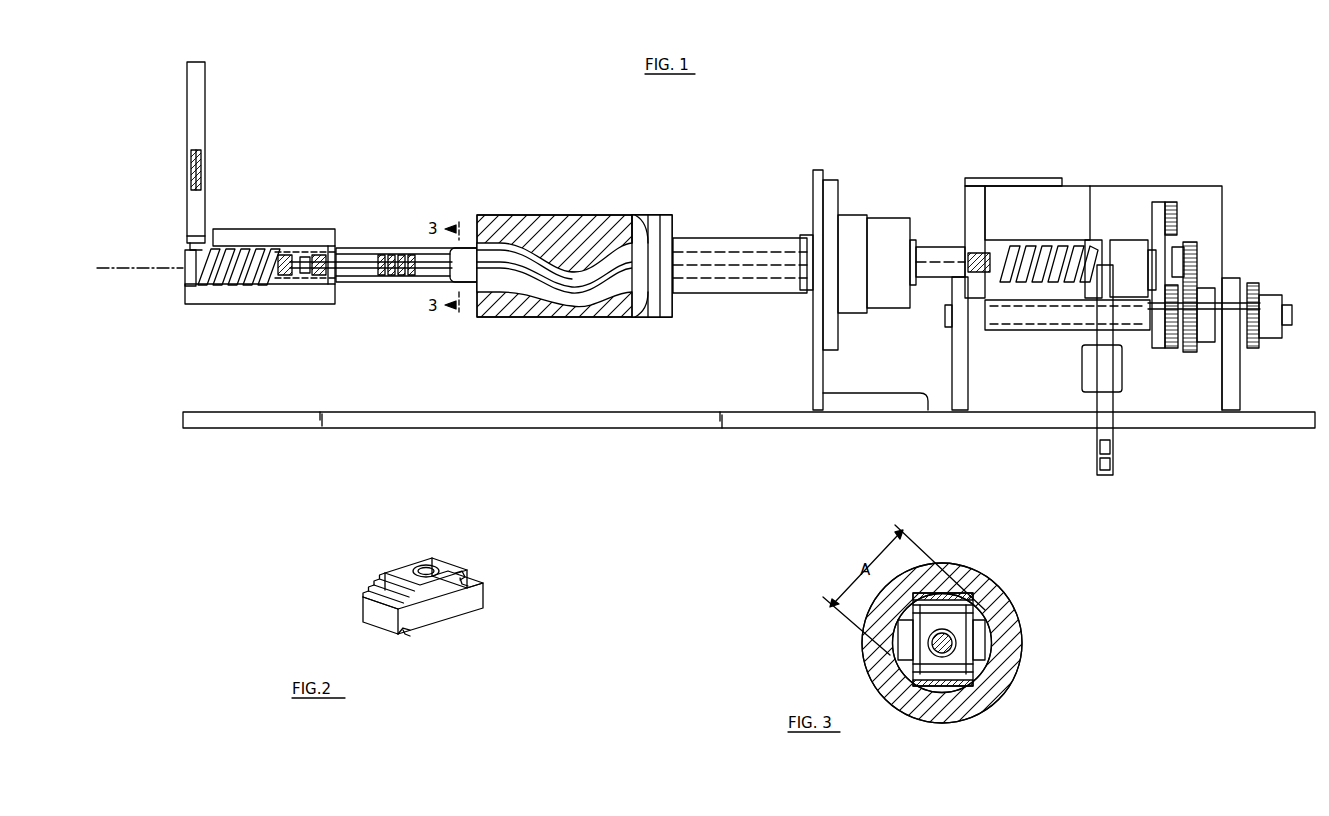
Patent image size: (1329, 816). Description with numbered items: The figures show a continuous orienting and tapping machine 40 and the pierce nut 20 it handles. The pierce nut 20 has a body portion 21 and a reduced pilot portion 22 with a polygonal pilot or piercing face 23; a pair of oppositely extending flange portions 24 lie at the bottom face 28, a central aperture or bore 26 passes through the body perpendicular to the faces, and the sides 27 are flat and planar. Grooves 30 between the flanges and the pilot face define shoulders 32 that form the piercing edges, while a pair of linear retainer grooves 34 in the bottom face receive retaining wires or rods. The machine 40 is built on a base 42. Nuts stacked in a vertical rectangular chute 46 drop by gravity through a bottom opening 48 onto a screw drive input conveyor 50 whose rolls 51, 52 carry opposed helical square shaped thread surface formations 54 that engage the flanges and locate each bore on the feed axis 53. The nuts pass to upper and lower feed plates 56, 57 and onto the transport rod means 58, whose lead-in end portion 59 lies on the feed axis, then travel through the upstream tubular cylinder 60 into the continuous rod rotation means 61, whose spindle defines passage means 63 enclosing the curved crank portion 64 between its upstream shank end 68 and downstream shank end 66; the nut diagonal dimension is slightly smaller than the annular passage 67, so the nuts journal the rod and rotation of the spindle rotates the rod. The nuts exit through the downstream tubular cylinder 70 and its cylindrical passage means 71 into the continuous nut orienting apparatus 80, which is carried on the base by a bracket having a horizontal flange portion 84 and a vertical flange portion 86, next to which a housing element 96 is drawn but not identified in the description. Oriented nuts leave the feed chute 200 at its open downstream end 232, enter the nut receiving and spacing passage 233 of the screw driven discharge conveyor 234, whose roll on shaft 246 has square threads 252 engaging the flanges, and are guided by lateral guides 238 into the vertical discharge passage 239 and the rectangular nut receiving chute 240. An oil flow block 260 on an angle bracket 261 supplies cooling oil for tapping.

In FIG. 1, the pierce nut 20 is at (204, 163).
In FIG. 2, the pierce nut 20 is at (434, 605).
In FIG. 3, the pierce nut 20 is at (935, 641).
In FIG. 2, the body portion 21 is at (456, 620).
In FIG. 3, the body portion 21 is at (943, 639).
In FIG. 2, the reduced pilot portion 22 is at (398, 557).
In FIG. 2, the pilot or piercing face 23 is at (447, 570).
In FIG. 2, the flange portions 24 is at (366, 614).
In FIG. 3, the flange portions 24 is at (960, 605).
In FIG. 2, the central aperture or bore 26 is at (418, 563).
In FIG. 3, the central aperture or bore 26 is at (956, 640).
In FIG. 2, the fastener sides 27 is at (388, 572).
In FIG. 3, the fastener sides 27 is at (892, 660).
In FIG. 2, the body portion bottom face 28 is at (408, 640).
In FIG. 3, the body portion bottom face 28 is at (960, 668).
In FIG. 2, the grooves 30 is at (375, 595).
In FIG. 2, the shoulders 32 is at (383, 577).
In FIG. 2, the retainer grooves 34 is at (420, 640).
In FIG. 3, the retainer grooves 34 is at (985, 618).
In FIG. 1, the continuous orienting and tapping machine 40 is at (574, 247).
In FIG. 1, the base 42 is at (662, 430).
In FIG. 1, the chute 46 is at (208, 80).
In FIG. 1, the bottom opening 48 is at (190, 243).
In FIG. 1, the input conveyor 50 is at (218, 257).
In FIG. 1, the roll 51 is at (185, 262).
In FIG. 1, the roll 52 is at (252, 290).
In FIG. 1, the feed axis 53 is at (127, 270).
In FIG. 1, the helical square shaped thread surface formations 54 is at (265, 250).
In FIG. 1, the upper feed plate 56 is at (336, 262).
In FIG. 1, the lower feed plate 57 is at (320, 292).
In FIG. 1, the transport rod means 58 is at (364, 258).
In FIG. 3, the transport rod means 58 is at (965, 650).
In FIG. 1, the lead-in end portion 59 is at (302, 260).
In FIG. 1, the upstream tubular cylinder 60 is at (410, 259).
In FIG. 3, the upstream tubular cylinder 60 is at (1022, 604).
In FIG. 1, the continuous rod rotation means 61 is at (545, 212).
In FIG. 1, the passage means 63 is at (580, 268).
In FIG. 1, the crank portion 64 is at (545, 288).
In FIG. 1, the downstream shank end 66 is at (630, 232).
In FIG. 1, the annular passage 67 is at (360, 272).
In FIG. 1, the upstream shank end 68 is at (496, 264).
In FIG. 1, the downstream tubular cylinder 70 is at (740, 267).
In FIG. 1, the downstream cylindrical passage means 71 is at (742, 270).
In FIG. 1, the continuous nut orienting apparatus 80 is at (877, 262).
In FIG. 1, the horizontal flange portion 84 is at (878, 393).
In FIG. 1, the vertical flange portion 86 is at (820, 172).
In FIG. 1, the motor housing 96 is at (860, 203).
In FIG. 1, the feed chute 200 is at (936, 243).
In FIG. 1, the open downstream end 232 is at (975, 252).
In FIG. 1, the nut receiving and spacing passage 233 is at (998, 255).
In FIG. 1, the discharge conveyor 234 is at (1120, 232).
In FIG. 1, the conveyor lateral guides 238 is at (1067, 325).
In FIG. 1, the discharge passage 239 is at (1118, 300).
In FIG. 1, the nut receiving chute 240 is at (1114, 444).
In FIG. 1, the shaft 246 is at (1204, 266).
In FIG. 1, the square threads 252 is at (1032, 288).
In FIG. 1, the oil flow block 260 is at (1092, 276).
In FIG. 1, the angle bracket 261 is at (1006, 178).